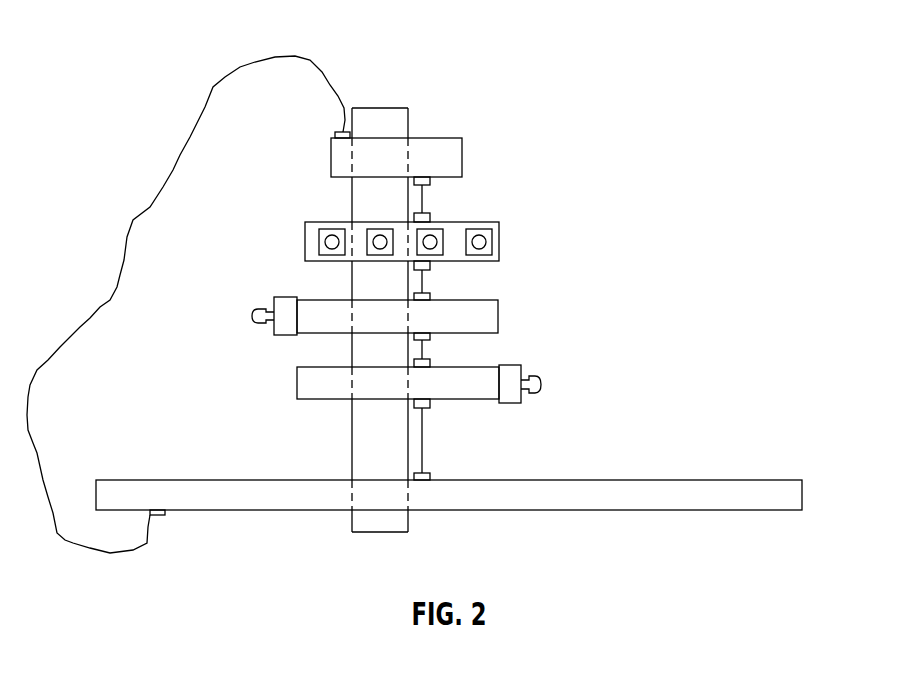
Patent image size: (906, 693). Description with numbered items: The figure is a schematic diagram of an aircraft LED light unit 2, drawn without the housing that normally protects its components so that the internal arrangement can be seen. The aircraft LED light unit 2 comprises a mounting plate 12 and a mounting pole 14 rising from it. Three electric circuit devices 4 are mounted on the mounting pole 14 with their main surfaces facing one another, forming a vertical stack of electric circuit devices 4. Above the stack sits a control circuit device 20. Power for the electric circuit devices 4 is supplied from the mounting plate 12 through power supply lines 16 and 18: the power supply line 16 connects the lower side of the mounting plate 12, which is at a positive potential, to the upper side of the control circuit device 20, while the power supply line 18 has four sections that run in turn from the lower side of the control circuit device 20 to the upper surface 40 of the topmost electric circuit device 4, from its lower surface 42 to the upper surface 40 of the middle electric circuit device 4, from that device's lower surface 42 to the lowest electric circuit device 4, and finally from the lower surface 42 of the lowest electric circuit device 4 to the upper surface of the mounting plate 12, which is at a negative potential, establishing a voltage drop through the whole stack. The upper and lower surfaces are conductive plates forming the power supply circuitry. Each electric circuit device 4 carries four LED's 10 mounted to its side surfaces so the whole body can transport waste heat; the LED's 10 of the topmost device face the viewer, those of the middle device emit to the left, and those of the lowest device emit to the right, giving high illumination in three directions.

The aircraft LED light unit 2 is at (106, 77).
The electric circuit device 4 is at (305, 240).
The LED 10 is at (493, 242).
The mounting plate 12 is at (757, 510).
The mounting pole 14 is at (384, 108).
The power supply line 16 is at (170, 177).
The power supply line 18 is at (423, 452).
The control circuit device 20 is at (465, 157).
The upper surface 40 is at (336, 222).
The lower surface 42 is at (336, 261).